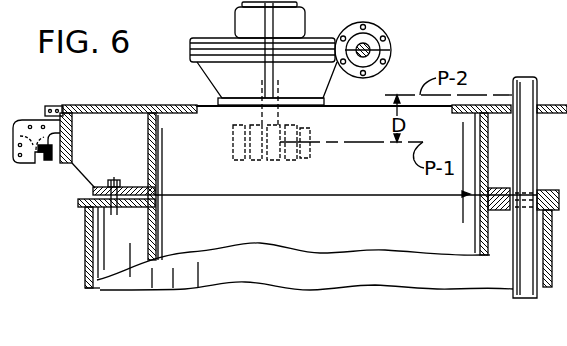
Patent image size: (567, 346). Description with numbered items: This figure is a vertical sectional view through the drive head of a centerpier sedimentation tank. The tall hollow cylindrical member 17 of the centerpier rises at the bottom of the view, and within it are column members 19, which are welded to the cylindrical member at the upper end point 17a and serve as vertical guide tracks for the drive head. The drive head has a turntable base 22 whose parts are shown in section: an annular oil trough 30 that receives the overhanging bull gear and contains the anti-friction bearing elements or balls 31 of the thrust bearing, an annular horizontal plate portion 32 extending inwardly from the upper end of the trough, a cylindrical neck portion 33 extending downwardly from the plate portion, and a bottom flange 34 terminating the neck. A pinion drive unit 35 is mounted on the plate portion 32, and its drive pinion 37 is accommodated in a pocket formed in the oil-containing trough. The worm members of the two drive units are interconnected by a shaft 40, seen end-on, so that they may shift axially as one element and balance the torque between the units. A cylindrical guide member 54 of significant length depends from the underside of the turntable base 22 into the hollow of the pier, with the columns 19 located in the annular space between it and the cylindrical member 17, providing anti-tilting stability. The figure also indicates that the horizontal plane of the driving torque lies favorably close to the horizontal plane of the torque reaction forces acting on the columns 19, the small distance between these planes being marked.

The cylindrical member 17 is at (85, 268).
The upper end point of cylindrical member 17a is at (93, 206).
The column members 19 is at (513, 267).
The turntable base 22 is at (160, 163).
The annular oil trough 30 is at (553, 106).
The anti-friction bearing elements 31 is at (563, 133).
The plate portion 32 is at (110, 106).
The cylindrical neck portion 33 is at (147, 130).
The bottom flange 34 is at (118, 186).
The pinion drive unit 35 is at (207, 40).
The drive pinion 37 is at (296, 160).
The shaft 40 is at (373, 50).
The cylindrical guide member 54 is at (157, 242).